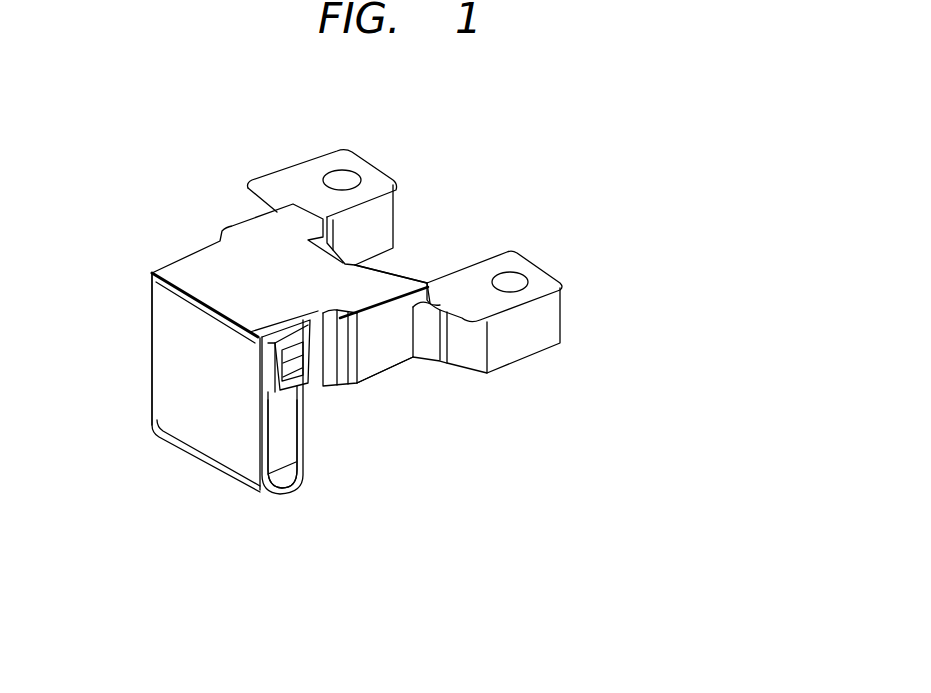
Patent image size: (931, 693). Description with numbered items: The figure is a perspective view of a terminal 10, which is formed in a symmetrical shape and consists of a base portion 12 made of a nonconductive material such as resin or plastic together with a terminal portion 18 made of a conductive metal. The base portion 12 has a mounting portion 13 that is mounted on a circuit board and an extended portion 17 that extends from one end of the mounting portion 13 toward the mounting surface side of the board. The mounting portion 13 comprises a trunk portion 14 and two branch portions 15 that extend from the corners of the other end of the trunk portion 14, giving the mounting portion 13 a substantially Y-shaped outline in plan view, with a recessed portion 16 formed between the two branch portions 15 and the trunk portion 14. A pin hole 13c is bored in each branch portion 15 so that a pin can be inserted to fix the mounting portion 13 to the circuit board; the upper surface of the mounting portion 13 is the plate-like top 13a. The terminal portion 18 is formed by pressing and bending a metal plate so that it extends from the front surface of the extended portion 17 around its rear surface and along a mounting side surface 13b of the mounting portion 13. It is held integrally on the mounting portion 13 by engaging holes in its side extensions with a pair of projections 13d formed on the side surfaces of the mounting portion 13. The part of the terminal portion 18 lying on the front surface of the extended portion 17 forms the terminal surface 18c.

The terminal 10 is at (381, 140).
The base portion 12 is at (660, 388).
The mounting portion 13 is at (605, 368).
The plate portion 13a is at (268, 241).
The mounting side surface 13b is at (373, 352).
The pin hole 13c is at (345, 180).
The projections 13d is at (283, 360).
The trunk portion 14 is at (362, 384).
The branch portions 15 is at (299, 187).
The recessed portion 16 is at (413, 257).
The extended portion 17 is at (288, 433).
The terminal portion 18 is at (192, 398).
The terminal surface 18c is at (192, 343).